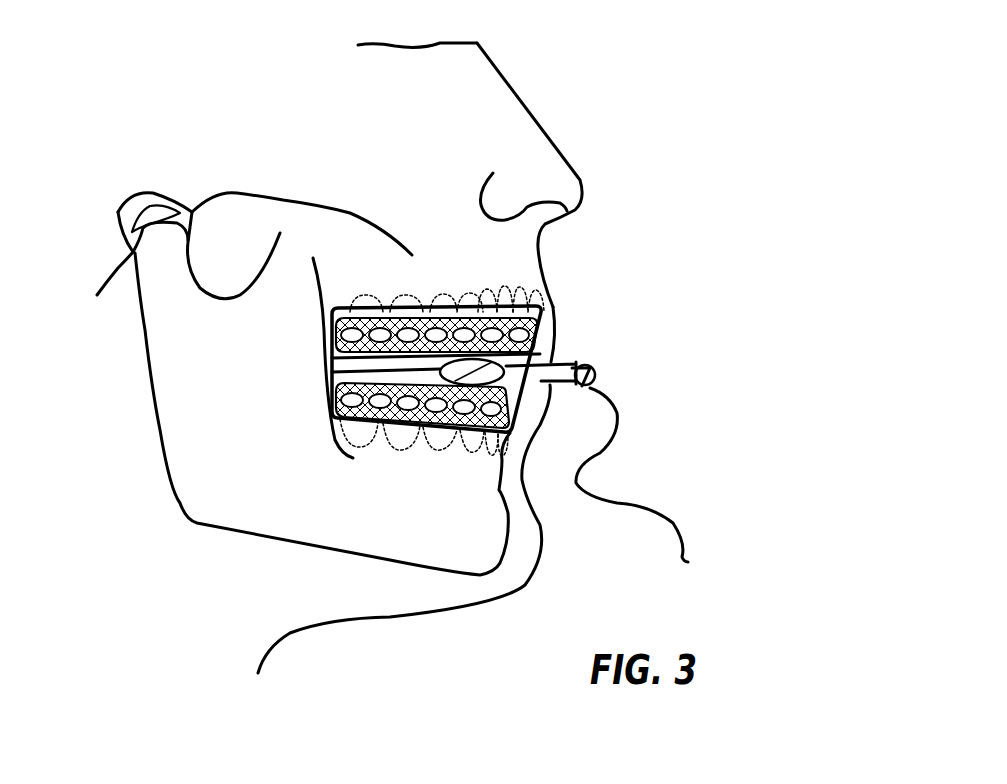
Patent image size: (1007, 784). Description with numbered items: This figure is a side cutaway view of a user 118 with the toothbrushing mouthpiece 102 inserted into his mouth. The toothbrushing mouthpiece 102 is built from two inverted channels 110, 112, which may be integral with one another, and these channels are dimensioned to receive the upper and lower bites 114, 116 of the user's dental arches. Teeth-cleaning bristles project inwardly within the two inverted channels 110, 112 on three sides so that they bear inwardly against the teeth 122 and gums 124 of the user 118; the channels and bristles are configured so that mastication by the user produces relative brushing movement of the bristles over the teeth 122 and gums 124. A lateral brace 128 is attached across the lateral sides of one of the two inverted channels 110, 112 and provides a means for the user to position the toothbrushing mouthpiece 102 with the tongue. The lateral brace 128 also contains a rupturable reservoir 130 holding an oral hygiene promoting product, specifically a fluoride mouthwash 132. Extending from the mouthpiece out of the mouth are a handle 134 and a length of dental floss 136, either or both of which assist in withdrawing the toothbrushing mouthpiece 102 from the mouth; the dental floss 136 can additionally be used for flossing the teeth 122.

The toothbrushing mouthpiece 102 is at (541, 296).
The inverted channel 110 is at (310, 330).
The inverted channel 112 is at (310, 386).
The upper bite 114 is at (582, 305).
The lower bite 116 is at (529, 511).
The user 118 is at (526, 85).
The teeth 122 is at (520, 283).
The gums 124 is at (443, 283).
The lateral brace 128 is at (492, 363).
The rupturable reservoir 130 is at (330, 410).
The fluoride mouthwash 132 is at (445, 388).
The handle 134 is at (586, 364).
The dental floss 136 is at (642, 494).